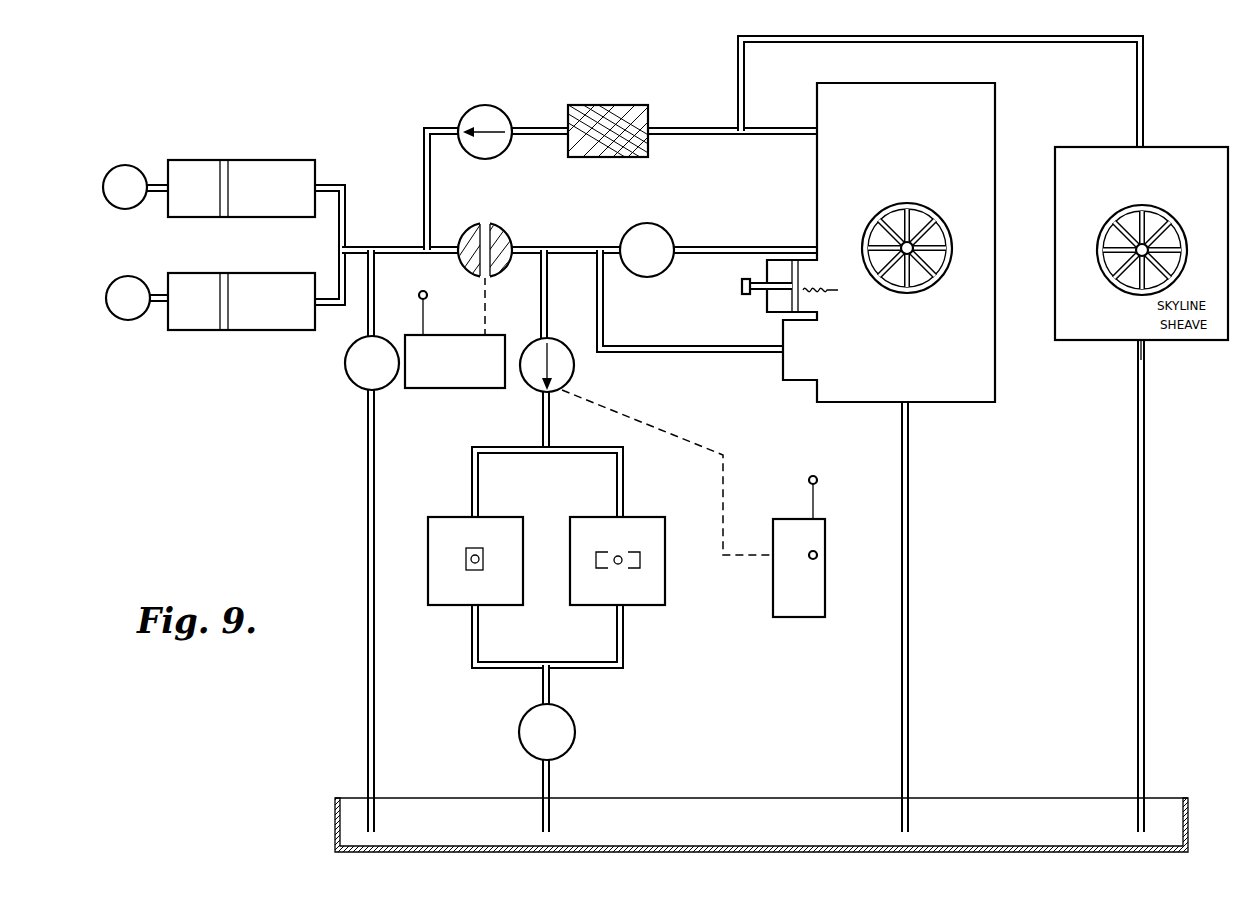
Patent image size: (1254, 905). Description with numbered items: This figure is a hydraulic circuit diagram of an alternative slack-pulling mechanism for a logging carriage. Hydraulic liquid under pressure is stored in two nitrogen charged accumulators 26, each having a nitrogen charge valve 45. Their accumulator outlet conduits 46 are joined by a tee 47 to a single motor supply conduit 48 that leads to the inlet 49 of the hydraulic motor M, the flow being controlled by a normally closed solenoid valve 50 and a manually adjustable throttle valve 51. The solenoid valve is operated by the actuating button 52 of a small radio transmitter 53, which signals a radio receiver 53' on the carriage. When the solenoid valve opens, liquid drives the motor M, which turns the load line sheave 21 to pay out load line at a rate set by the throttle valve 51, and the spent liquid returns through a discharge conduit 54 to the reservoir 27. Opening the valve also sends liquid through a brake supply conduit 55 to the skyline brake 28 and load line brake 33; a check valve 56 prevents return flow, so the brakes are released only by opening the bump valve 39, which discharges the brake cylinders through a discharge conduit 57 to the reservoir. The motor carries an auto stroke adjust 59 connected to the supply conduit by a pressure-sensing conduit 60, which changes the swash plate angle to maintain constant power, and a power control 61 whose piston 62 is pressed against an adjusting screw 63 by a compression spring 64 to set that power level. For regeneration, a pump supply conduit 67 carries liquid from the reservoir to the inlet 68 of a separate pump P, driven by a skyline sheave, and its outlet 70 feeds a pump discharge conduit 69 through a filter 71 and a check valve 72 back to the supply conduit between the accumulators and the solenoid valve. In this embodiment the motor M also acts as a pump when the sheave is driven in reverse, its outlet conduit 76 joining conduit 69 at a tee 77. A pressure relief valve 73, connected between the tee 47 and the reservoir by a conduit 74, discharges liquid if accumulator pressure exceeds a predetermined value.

The load line sheave 21 is at (938, 228).
The nitrogen charged accumulators 26 is at (258, 218).
The reservoir 27 is at (988, 798).
The skyline brake 28 is at (645, 517).
The load line brake 33 is at (432, 516).
The bump valve 39 is at (574, 726).
The nitrogen charge valve 45 is at (130, 212).
The accumulator outlet conduits 46 is at (332, 296).
The tee 47 is at (368, 246).
The motor supply conduit 48 is at (405, 246).
The motor inlet 49 is at (816, 246).
The solenoid valve 50 is at (510, 238).
The throttle valve 51 is at (672, 236).
The actuating button 52 is at (817, 558).
The radio transmitter 53 is at (821, 546).
The radio receiver 53' is at (455, 359).
The discharge conduit 54 is at (910, 558).
The brake supply conduit 55 is at (548, 306).
The check valve 56 is at (575, 380).
The discharge conduit 57 is at (552, 786).
The auto stroke adjust 59 is at (796, 384).
The pressure-sensing conduit 60 is at (678, 348).
The power control 61 is at (792, 316).
The piston 62 is at (793, 260).
The adjusting screw 63 is at (742, 290).
The compression spring 64 is at (831, 290).
The pump supply conduit 67 is at (1147, 528).
The pump inlet 68 is at (1146, 342).
The pump discharge conduit 69 is at (1067, 38).
The pump outlet 70 is at (1148, 148).
The filter 71 is at (625, 104).
The check valve 72 is at (499, 112).
The pressure relief valve 73 is at (346, 362).
The conduit 74 is at (368, 460).
The motor outlet conduit 76 is at (791, 136).
The tee 77 is at (737, 136).
The hydraulic motor M is at (988, 106).
The hydraulic pump P is at (1097, 146).